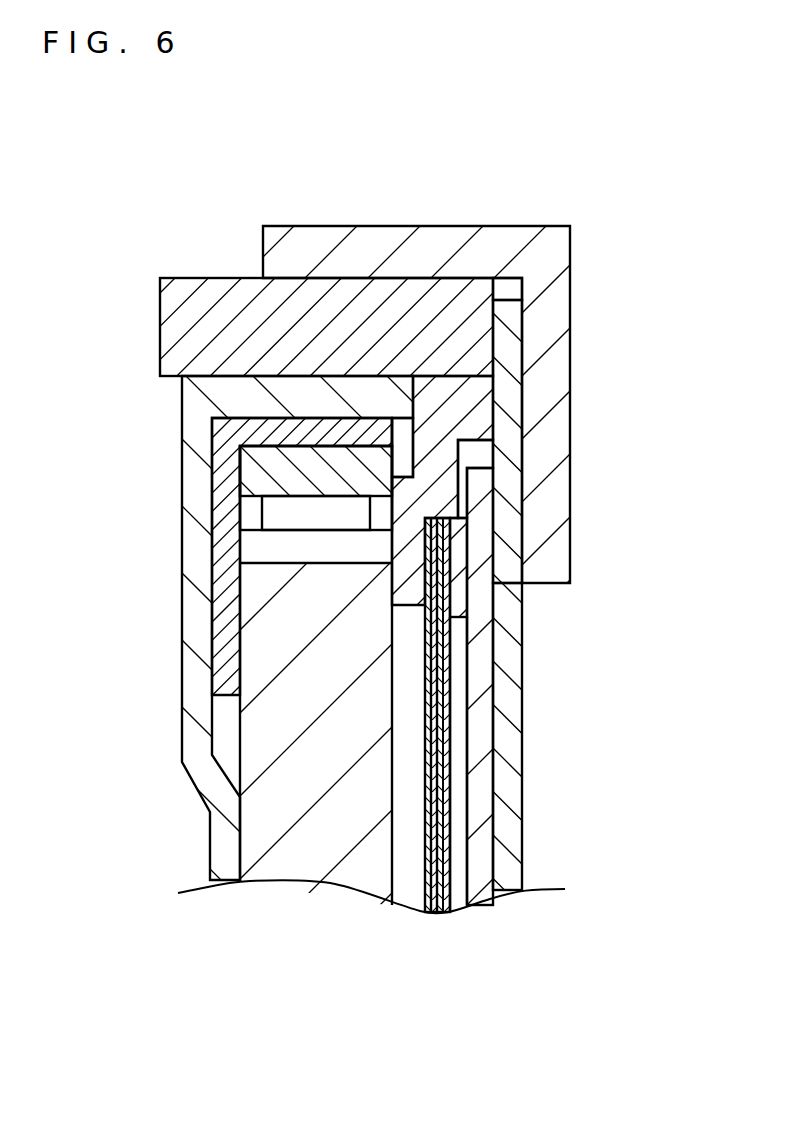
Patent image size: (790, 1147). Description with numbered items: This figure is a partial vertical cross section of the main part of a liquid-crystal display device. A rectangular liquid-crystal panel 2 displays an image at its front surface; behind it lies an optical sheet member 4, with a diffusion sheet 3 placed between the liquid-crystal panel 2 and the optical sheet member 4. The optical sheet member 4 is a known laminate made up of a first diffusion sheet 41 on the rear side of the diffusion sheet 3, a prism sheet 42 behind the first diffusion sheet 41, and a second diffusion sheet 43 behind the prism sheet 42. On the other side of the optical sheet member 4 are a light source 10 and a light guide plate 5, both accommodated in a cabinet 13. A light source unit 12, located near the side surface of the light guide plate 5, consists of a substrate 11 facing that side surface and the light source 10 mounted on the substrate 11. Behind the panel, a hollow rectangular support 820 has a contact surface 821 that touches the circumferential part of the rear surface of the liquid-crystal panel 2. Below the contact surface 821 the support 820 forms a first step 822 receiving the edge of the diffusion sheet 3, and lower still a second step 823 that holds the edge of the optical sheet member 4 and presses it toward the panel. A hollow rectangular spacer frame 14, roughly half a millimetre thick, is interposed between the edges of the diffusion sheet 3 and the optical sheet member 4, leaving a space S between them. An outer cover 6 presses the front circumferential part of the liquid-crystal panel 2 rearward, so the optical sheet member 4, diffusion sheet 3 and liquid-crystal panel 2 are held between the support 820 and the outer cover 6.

The liquid-crystal panel 2 is at (508, 712).
The diffusion sheet 3 is at (480, 680).
The optical sheet member 4 is at (648, 765).
The light guide plate 5 is at (272, 815).
The outer cover 6 is at (500, 238).
The light source 10 is at (270, 518).
The substrate 11 is at (252, 484).
The light source unit 12 is at (97, 436).
The cabinet 13 is at (185, 680).
The spacer frame 14 is at (460, 555).
The first diffusion sheet 41 is at (442, 797).
The prism sheet 42 is at (438, 822).
The second diffusion sheet 43 is at (430, 845).
The support 820 is at (212, 285).
The contact surface 821 is at (493, 340).
The first step 822 is at (455, 486).
The second step 823 is at (415, 571).
The space S is at (455, 745).